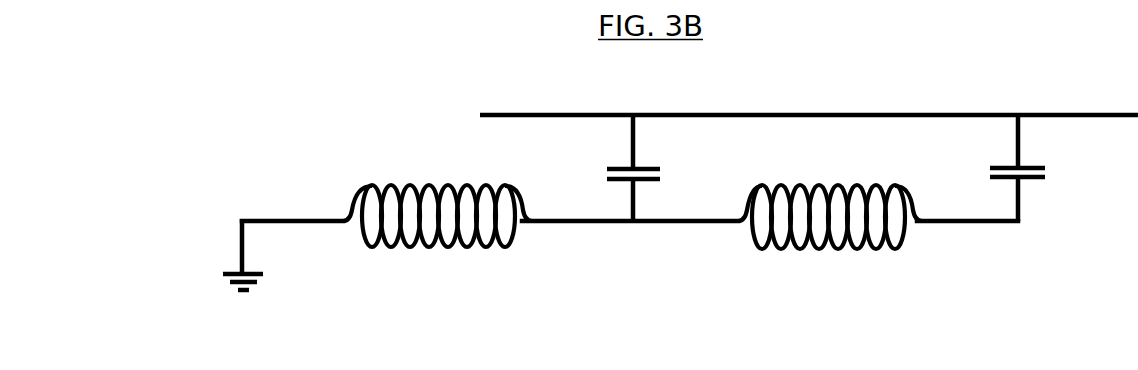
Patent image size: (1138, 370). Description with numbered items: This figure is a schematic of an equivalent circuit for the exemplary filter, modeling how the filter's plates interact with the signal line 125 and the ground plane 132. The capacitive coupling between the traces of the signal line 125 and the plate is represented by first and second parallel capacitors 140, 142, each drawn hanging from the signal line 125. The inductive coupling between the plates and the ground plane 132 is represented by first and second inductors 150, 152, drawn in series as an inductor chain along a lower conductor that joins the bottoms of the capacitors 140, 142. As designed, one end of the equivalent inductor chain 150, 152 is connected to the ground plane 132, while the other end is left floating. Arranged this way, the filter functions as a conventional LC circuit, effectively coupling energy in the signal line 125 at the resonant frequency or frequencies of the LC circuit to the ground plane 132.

The signal line 125 is at (829, 113).
The ground plane 132 is at (225, 273).
The first parallel capacitor 140 is at (613, 166).
The second parallel capacitor 142 is at (1040, 163).
The first inductor 150 is at (440, 249).
The second inductor 152 is at (826, 183).